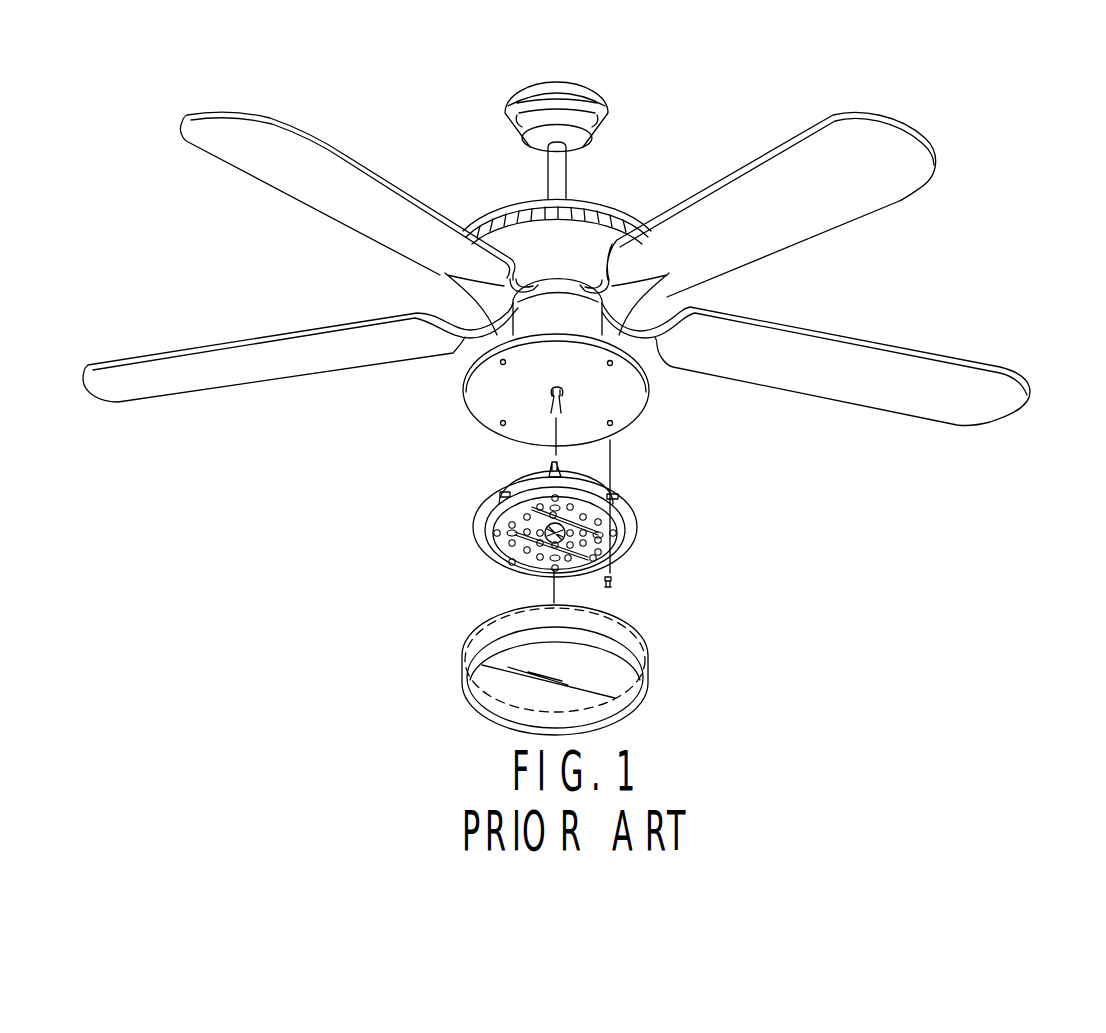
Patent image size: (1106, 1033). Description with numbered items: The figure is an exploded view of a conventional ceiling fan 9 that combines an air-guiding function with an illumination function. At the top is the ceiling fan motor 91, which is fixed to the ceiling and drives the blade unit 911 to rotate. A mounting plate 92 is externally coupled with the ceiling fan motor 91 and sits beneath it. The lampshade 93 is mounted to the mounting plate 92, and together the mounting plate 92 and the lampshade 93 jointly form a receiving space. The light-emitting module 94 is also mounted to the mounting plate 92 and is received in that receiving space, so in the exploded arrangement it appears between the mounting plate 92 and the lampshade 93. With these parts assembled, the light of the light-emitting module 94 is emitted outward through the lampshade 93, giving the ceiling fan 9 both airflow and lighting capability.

The ceiling fan 9 is at (576, 388).
The ceiling fan motor 91 is at (567, 305).
The blade unit 911 is at (905, 400).
The mounting plate 92 is at (633, 403).
The lampshade 93 is at (640, 645).
The light-emitting module 94 is at (646, 523).